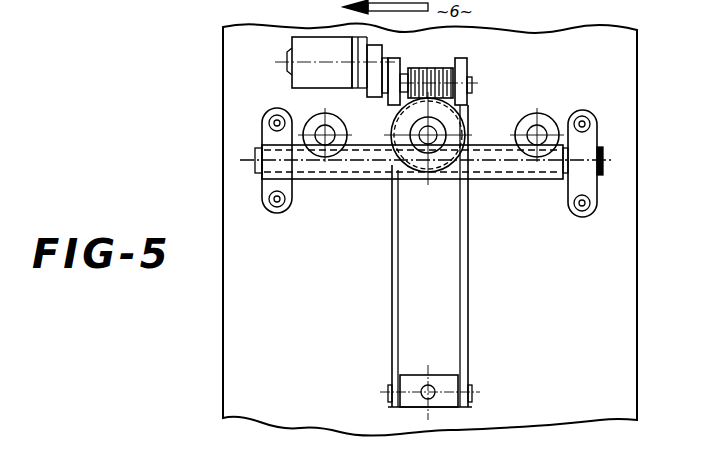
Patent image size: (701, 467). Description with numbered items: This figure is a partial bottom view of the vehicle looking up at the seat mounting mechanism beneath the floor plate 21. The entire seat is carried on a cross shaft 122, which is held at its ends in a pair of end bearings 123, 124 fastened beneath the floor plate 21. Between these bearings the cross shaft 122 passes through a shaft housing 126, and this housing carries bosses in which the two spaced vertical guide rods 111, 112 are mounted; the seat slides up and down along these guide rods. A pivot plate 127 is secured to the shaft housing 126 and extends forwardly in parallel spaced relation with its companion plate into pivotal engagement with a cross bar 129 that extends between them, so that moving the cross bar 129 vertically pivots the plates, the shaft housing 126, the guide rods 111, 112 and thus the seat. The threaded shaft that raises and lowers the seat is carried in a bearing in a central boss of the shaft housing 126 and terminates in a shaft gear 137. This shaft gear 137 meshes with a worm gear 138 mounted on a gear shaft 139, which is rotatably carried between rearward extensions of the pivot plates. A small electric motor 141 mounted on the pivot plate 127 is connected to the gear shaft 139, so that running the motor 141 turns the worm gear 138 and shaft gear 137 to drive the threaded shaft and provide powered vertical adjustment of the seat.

The floor plate 21 is at (628, 310).
The vertical guide rod 111 is at (312, 120).
The vertical guide rod 112 is at (537, 114).
The cross shaft 122 is at (255, 155).
The end bearing 123 is at (282, 177).
The end bearing 124 is at (577, 182).
The shaft housing 126 is at (467, 273).
The pivot plate 127 is at (392, 313).
The cross bar 129 is at (433, 377).
The shaft gear 137 is at (473, 111).
The worm gear 138 is at (433, 72).
The gear shaft 139 is at (468, 72).
The electric motor 141 is at (294, 42).